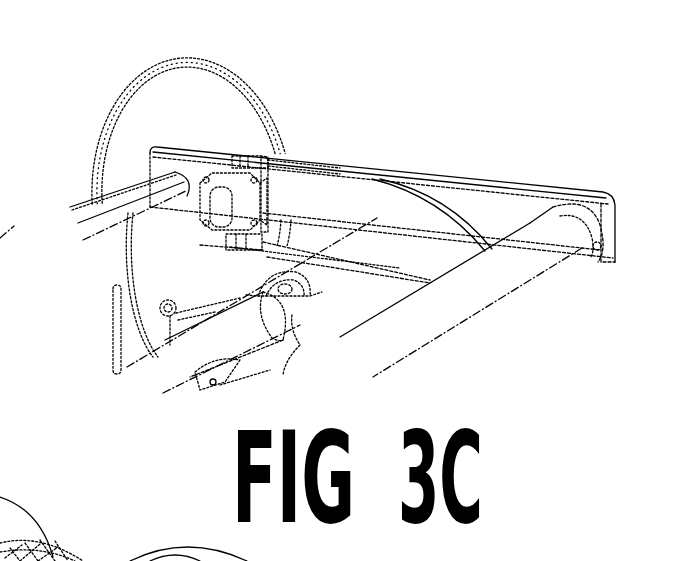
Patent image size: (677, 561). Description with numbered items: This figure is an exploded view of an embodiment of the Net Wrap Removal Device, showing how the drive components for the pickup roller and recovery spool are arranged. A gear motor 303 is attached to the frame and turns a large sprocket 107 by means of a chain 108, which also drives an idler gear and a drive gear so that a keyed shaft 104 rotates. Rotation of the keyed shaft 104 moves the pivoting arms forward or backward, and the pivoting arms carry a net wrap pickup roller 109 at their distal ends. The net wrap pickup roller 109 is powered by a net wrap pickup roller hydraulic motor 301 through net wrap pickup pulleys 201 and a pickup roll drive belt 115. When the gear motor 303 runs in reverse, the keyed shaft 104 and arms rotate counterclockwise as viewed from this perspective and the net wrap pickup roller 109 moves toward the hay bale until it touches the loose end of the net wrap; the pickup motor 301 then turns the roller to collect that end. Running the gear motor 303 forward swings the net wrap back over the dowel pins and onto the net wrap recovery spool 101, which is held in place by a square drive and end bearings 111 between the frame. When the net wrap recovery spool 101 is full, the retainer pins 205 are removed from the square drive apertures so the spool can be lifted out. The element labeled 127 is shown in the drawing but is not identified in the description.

The large sprocket 107 is at (193, 117).
The keyed shaft 104 is at (147, 193).
The net wrap recovery spool 101 is at (220, 342).
The net wrap pickup roller hydraulic motor 301 is at (222, 193).
The net wrap pickup pulleys 201 is at (263, 148).
The chain 108 is at (293, 237).
The pickup roll drive belt 115 is at (464, 178).
The net wrap pickup roller 109 is at (512, 268).
The end bearings 111 is at (283, 288).
The retainer pins 205 is at (283, 300).
The bracket 127 is at (292, 315).
The gear motor 303 is at (215, 385).